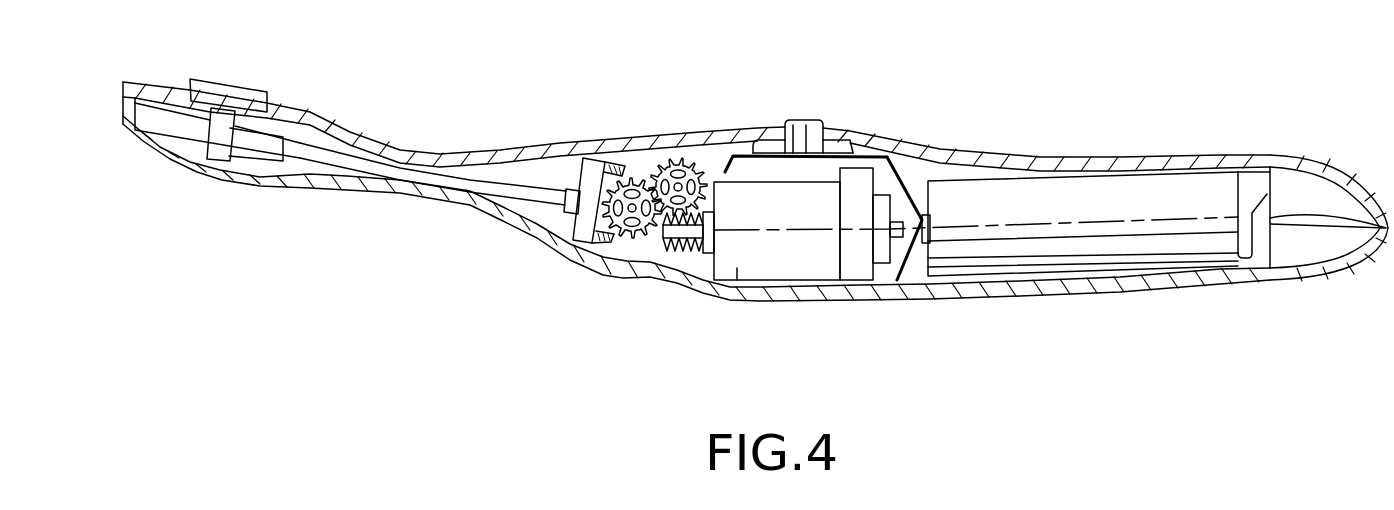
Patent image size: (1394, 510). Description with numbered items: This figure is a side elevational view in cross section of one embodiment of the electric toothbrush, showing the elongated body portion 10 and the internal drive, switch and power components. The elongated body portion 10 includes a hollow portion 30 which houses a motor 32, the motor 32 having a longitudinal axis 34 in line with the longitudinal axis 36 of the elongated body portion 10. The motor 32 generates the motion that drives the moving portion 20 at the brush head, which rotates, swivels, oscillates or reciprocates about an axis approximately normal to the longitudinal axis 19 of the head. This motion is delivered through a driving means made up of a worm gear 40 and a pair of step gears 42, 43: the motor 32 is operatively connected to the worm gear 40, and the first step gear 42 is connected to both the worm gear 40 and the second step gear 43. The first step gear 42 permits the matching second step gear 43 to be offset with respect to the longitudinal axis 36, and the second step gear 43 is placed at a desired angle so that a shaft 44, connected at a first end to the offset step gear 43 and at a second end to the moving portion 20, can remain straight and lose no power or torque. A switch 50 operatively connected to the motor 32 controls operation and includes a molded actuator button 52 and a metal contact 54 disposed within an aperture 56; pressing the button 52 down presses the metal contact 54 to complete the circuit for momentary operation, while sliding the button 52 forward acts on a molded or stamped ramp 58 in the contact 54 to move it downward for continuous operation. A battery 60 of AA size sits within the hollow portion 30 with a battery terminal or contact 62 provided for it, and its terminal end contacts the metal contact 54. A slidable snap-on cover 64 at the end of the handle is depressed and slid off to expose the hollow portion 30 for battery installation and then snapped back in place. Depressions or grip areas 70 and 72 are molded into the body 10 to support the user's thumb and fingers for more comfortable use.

The elongated body portion 10 is at (1170, 280).
The longitudinal axis 19 is at (122, 117).
The moving portion 20 is at (212, 120).
The hollow portion 30 is at (920, 275).
The motor 32 is at (737, 273).
The longitudinal axis 34 is at (773, 233).
The longitudinal axis 36 is at (1168, 162).
The worm gear 40 is at (660, 245).
The first step gear 42 is at (677, 153).
The second step gear 43 is at (637, 178).
The shaft 44 is at (360, 163).
The switch 50 is at (842, 132).
The molded actuator button 52 is at (800, 120).
The metal contact 54 is at (903, 177).
The aperture 56 is at (762, 137).
The ramp 58 is at (783, 157).
The battery 60 is at (1053, 263).
The battery terminal or contact 62 is at (1253, 240).
The slidable snap-on cover 64 is at (1292, 187).
The depression or grip area 70 is at (648, 280).
The depression or grip area 72 is at (653, 140).